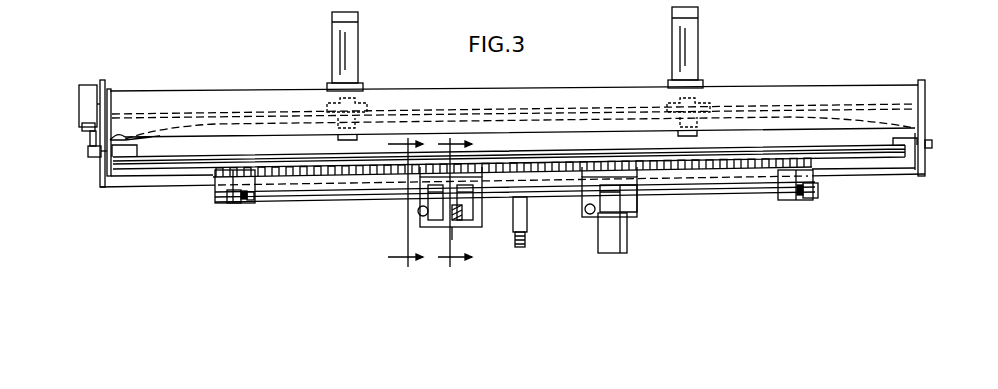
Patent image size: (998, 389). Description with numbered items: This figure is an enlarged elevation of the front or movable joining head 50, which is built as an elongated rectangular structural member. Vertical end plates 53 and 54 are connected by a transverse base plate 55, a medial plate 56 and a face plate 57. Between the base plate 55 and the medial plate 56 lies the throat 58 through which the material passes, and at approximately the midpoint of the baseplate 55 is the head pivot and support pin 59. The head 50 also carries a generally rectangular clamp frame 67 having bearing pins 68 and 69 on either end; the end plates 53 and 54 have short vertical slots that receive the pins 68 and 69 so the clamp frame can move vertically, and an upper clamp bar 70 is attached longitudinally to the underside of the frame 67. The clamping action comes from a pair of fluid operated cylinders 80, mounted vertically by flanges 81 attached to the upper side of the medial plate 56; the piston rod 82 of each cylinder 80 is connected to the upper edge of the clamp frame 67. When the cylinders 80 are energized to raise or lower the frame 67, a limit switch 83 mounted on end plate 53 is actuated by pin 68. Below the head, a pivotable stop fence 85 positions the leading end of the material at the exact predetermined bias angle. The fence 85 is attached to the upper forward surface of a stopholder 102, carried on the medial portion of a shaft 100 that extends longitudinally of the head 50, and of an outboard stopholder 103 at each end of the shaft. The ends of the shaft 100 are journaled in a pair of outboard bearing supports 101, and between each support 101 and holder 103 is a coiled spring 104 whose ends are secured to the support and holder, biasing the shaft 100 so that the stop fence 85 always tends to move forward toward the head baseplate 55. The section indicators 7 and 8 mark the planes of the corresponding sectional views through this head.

The front head 50 is at (772, 56).
The end plate 53 is at (107, 164).
The end plate 54 is at (922, 90).
The base plate 55 is at (128, 183).
The medial plate 56 is at (155, 110).
The face plate 57 is at (273, 98).
The throat 58 is at (158, 170).
The head pivot and support pin 59 is at (527, 222).
The clamp frame 67 is at (110, 134).
The bearing pin 68 is at (88, 152).
The bearing pin 69 is at (932, 144).
The upper clamp bar 70 is at (205, 160).
The fluid operated cylinder 80 is at (352, 42).
The flange 81 is at (362, 97).
The piston rod 82 is at (356, 118).
The limit switch 83 is at (85, 104).
The stop fence 85 is at (345, 187).
The shaft 100 is at (386, 192).
The outboard bearing support 101 is at (240, 205).
The stopholder 102 is at (475, 193).
The outboard stopholder 103 is at (262, 200).
The coiled spring 104 is at (246, 205).
The section line 7- 7 is at (463, 201).
The section line 8- 8 is at (397, 202).